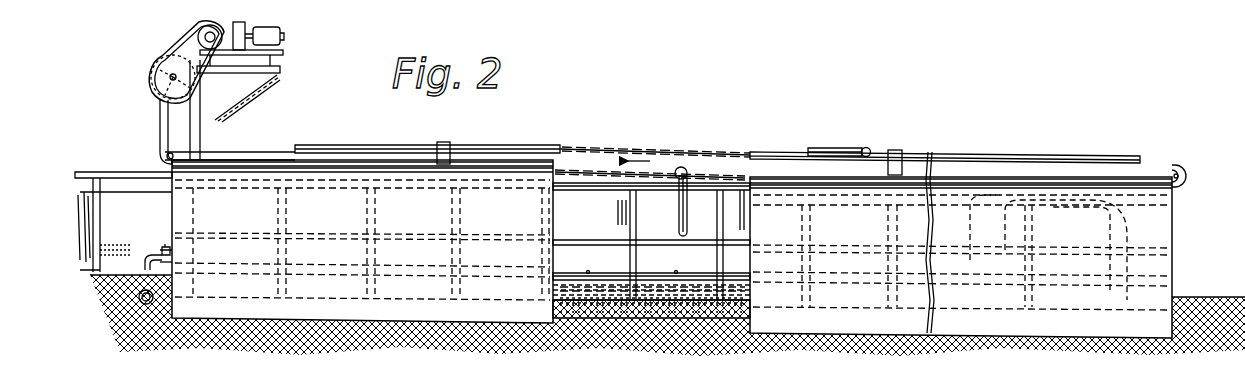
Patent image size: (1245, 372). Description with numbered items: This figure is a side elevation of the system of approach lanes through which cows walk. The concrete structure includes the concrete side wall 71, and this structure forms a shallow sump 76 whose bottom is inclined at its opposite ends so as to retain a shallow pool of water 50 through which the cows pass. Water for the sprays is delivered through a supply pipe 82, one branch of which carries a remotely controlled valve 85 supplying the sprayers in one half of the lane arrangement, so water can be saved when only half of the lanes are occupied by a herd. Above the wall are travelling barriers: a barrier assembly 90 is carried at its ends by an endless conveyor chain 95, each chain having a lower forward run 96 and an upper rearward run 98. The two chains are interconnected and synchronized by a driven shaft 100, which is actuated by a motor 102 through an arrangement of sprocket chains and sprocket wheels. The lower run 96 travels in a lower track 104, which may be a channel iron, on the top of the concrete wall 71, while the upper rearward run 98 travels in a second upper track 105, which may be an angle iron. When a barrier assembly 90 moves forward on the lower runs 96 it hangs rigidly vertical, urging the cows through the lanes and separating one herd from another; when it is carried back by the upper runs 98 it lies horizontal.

The shallow pool of water 50 is at (606, 292).
The concrete side wall 71 is at (1163, 255).
The shallow sump 76 is at (648, 303).
The supply pipe 82 is at (138, 297).
The remotely controlled valve 85 is at (165, 247).
The barrier assembly 90 is at (838, 147).
The endless conveyor chain 95 is at (602, 148).
The lower forward run 96 is at (665, 167).
The upper rearward run 98 is at (642, 150).
The driven shaft 100 is at (165, 153).
The motor 102 is at (283, 40).
The lower track 104 is at (345, 162).
The upper track 105 is at (322, 147).